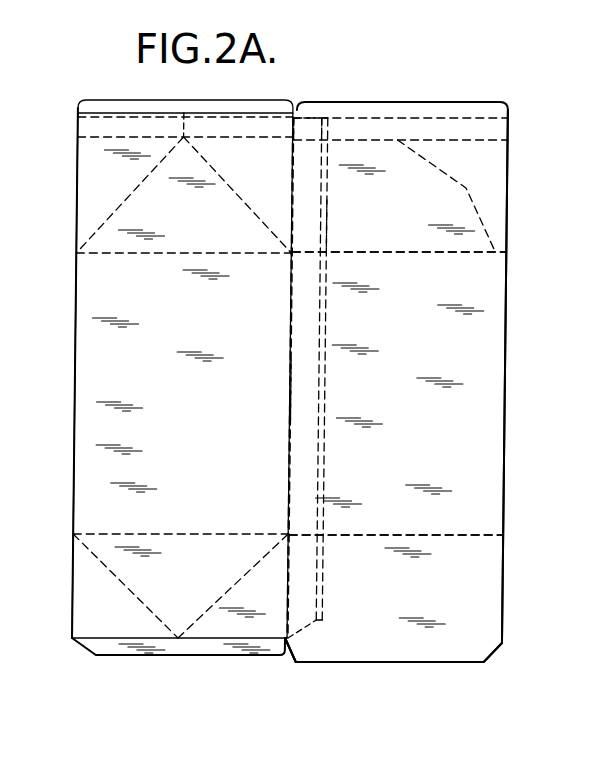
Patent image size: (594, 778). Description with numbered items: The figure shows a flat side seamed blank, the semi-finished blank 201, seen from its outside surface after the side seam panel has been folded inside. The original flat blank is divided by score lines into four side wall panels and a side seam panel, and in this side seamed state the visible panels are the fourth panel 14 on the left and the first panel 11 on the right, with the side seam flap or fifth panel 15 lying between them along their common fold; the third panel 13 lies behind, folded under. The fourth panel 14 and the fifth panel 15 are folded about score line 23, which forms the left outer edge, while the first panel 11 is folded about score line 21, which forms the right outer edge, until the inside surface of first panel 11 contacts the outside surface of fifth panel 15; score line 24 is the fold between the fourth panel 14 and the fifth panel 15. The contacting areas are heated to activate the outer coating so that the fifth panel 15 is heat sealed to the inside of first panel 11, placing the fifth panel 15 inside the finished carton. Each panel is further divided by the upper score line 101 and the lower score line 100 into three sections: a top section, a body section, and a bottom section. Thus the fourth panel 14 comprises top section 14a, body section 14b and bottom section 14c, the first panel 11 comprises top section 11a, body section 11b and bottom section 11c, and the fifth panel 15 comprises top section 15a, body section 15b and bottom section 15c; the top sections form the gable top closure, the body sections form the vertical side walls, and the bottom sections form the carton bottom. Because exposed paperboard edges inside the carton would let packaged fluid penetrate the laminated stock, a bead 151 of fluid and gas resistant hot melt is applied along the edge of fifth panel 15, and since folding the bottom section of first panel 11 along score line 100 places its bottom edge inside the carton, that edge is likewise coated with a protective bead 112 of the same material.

The first panel 11 is at (420, 338).
The top section of first panel 11a is at (424, 212).
The body section of first panel 11b is at (424, 460).
The bottom section of first panel 11c is at (411, 601).
The third panel 13 is at (170, 657).
The fourth panel 14 is at (196, 331).
The top section of fourth panel 14a is at (205, 223).
The body section of fourth panel 14b is at (205, 449).
The bottom section of fourth panel 14c is at (205, 586).
The side seam panel 15 is at (327, 385).
The top section of side seam panel 15a is at (312, 155).
The body section of side seam panel 15b is at (298, 387).
The bottom section of side seam panel 15c is at (305, 613).
The score line 21 is at (507, 431).
The score line 23 is at (75, 383).
The score line 24 is at (291, 474).
The score line 100 is at (403, 534).
The score line 101 is at (413, 253).
The protective bead 112 is at (415, 663).
The bead 151 is at (331, 232).
The semi-finished blank 201 is at (512, 384).